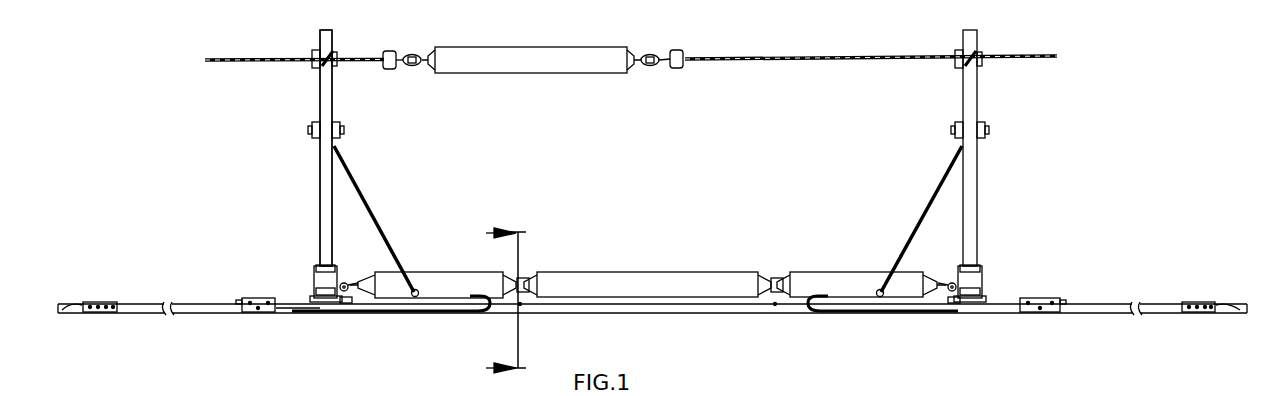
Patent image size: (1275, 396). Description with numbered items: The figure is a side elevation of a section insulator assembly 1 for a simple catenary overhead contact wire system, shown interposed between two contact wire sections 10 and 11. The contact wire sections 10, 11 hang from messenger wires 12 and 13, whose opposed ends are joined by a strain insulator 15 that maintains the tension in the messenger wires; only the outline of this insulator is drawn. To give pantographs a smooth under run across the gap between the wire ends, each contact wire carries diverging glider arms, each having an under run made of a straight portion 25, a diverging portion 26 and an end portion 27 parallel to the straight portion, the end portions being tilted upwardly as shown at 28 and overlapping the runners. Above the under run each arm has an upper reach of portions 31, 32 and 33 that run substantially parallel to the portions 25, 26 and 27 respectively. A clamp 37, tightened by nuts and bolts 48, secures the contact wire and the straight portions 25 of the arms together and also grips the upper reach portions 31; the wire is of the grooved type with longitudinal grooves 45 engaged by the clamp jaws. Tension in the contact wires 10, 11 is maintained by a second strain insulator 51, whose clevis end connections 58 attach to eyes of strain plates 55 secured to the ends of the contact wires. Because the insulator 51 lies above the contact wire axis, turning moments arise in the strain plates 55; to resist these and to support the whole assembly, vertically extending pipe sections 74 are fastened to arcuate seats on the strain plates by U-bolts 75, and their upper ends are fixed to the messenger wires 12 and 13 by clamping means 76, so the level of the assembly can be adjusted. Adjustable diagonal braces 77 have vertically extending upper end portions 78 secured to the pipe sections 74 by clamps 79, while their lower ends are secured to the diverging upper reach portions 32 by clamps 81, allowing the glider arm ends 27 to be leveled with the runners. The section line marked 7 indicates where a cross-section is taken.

The section insulator assembly 1 is at (318, 183).
The section line 7- 7 is at (498, 301).
The contact wire section 10 is at (80, 306).
The contact wire section 11 is at (1235, 305).
The messenger wire 12 is at (228, 58).
The messenger wire 13 is at (1020, 55).
The strain insulator 15 is at (543, 55).
The straight portion 25 is at (140, 313).
The diverging portion 26 is at (296, 313).
The end portion 27 is at (408, 313).
The upward tilt of end portion 28 is at (490, 303).
The upper reach portion 31 is at (240, 300).
The diverging upper reach portion 32 is at (420, 314).
The upper reach end portion 33 is at (437, 298).
The clamp 37 is at (242, 312).
The longitudinally extending grooves 45 is at (1060, 390).
The nuts and bolts 48 is at (258, 313).
The strain insulator 51 is at (678, 258).
The strain plate 55 is at (345, 283).
The clevis end connection 58 is at (348, 304).
The pipe section 74 is at (334, 100).
The U-bolt 75 is at (330, 266).
The clamping means 76 is at (336, 56).
The adjustable diagonal brace 77 is at (352, 180).
The upper end portion of brace 78 is at (342, 125).
The clamp 79 is at (314, 126).
The clamp 81 is at (415, 290).